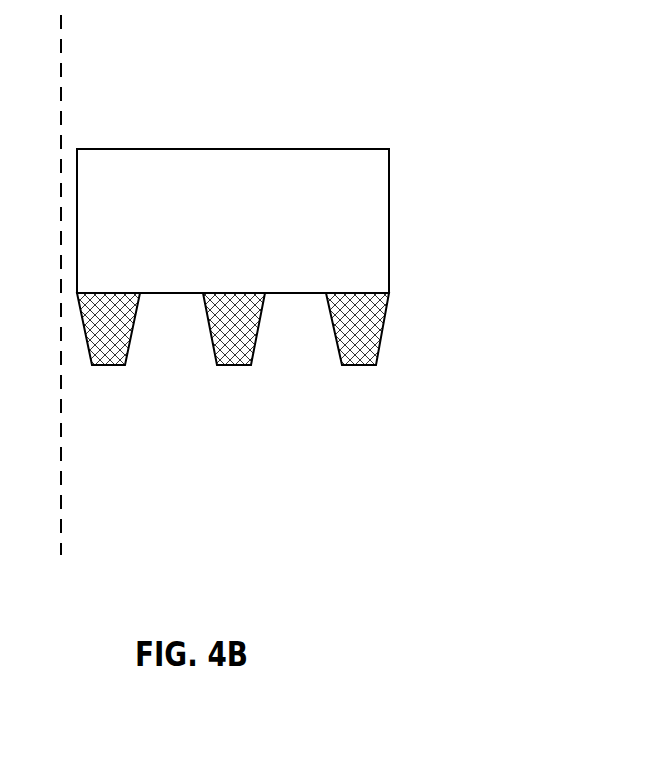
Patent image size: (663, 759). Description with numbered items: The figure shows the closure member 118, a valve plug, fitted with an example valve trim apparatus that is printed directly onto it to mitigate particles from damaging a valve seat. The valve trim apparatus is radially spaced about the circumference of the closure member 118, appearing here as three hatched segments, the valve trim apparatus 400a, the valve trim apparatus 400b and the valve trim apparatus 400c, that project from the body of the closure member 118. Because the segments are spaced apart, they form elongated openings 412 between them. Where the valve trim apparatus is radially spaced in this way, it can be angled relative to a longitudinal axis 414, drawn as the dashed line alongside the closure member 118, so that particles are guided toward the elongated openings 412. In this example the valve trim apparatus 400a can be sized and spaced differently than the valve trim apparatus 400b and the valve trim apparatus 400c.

The longitudinal axis 414 is at (62, 73).
The closure member 118 is at (97, 222).
The valve trim apparatus 400a is at (118, 345).
The valve trim apparatus 400b is at (236, 345).
The valve trim apparatus 400c is at (365, 345).
The elongated openings 412 is at (292, 322).